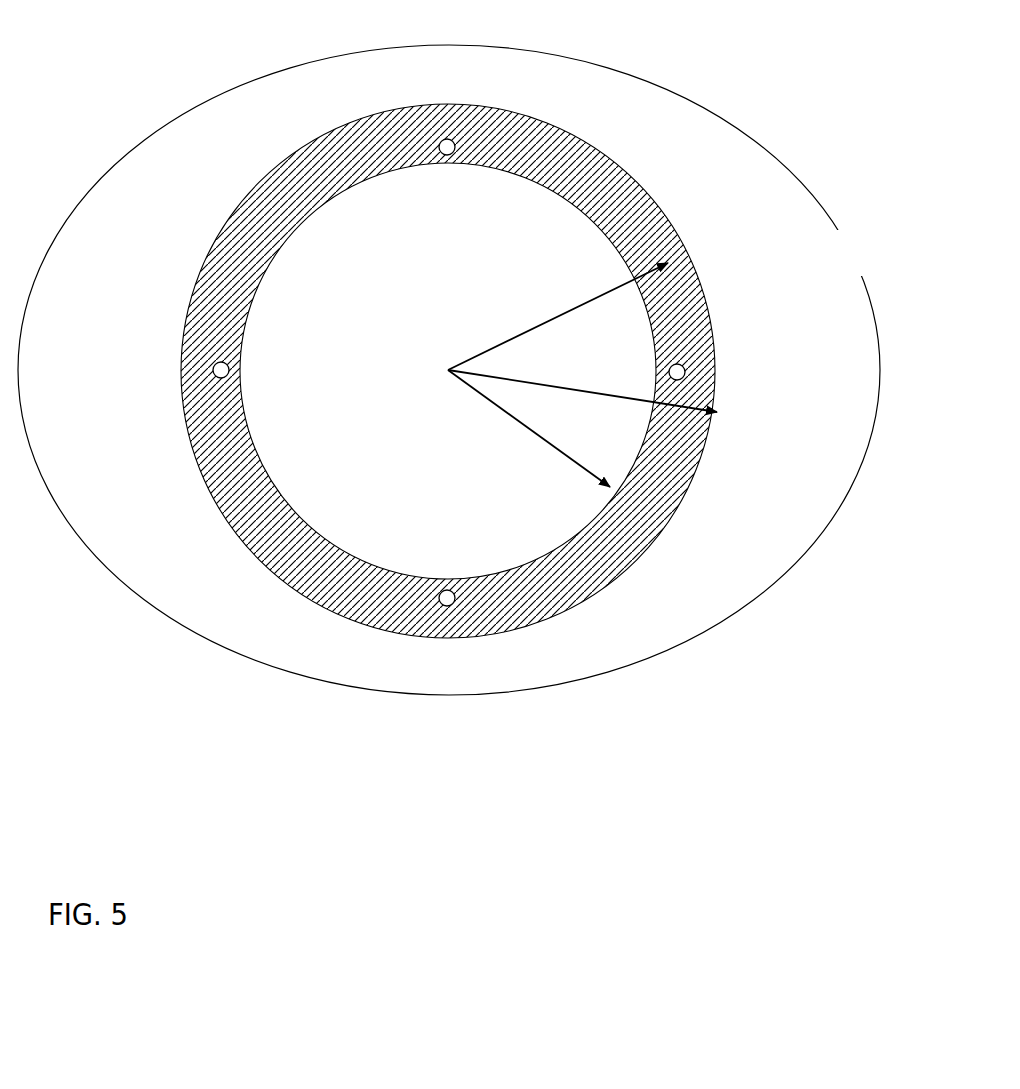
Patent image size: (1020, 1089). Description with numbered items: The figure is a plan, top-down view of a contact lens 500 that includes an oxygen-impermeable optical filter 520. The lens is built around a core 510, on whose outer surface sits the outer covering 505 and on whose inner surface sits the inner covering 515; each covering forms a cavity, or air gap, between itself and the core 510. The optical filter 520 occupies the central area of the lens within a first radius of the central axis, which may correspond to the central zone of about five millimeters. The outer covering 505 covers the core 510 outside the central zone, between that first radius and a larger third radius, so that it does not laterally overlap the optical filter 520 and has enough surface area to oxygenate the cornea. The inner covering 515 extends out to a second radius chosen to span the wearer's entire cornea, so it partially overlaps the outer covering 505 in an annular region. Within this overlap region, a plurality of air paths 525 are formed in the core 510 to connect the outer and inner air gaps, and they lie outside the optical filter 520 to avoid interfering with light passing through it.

The contact lens 500 is at (482, 370).
The outer covering 505 is at (702, 281).
The core 510 is at (482, 370).
The inner covering 515 is at (393, 353).
The optical filter 520 is at (465, 451).
The air paths 525 is at (446, 139).